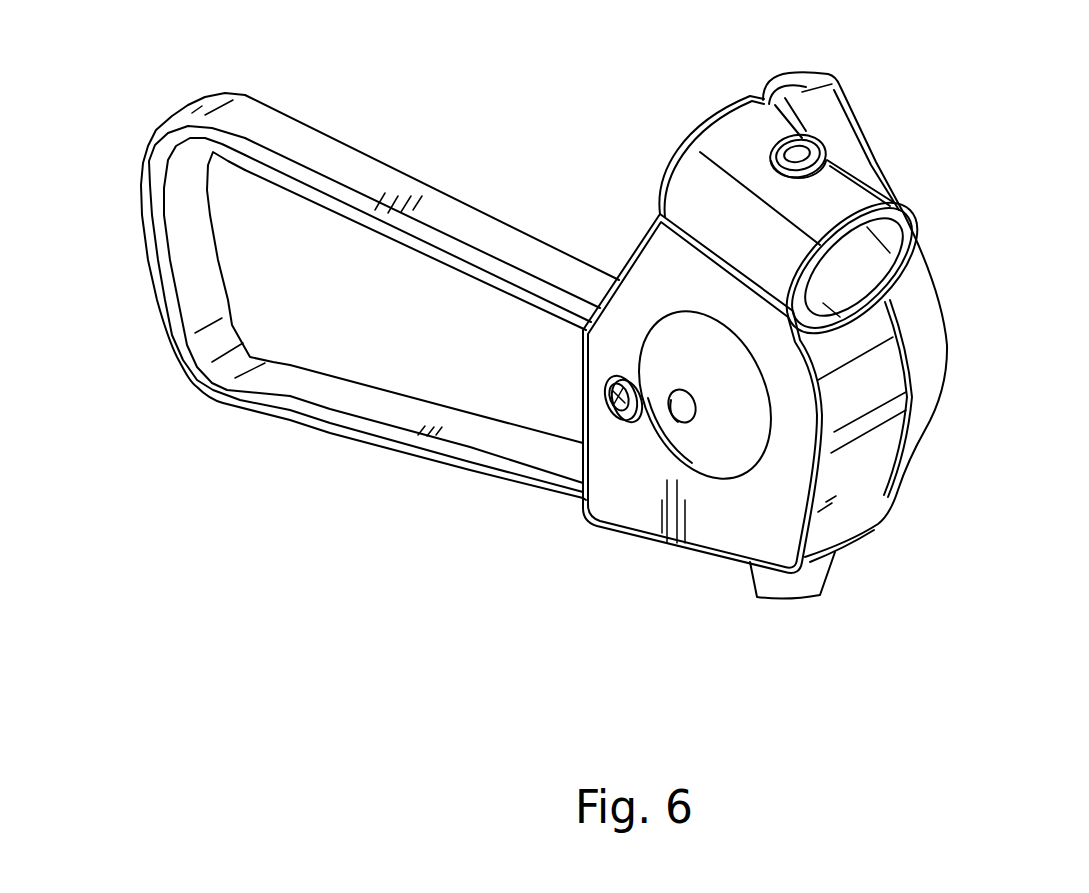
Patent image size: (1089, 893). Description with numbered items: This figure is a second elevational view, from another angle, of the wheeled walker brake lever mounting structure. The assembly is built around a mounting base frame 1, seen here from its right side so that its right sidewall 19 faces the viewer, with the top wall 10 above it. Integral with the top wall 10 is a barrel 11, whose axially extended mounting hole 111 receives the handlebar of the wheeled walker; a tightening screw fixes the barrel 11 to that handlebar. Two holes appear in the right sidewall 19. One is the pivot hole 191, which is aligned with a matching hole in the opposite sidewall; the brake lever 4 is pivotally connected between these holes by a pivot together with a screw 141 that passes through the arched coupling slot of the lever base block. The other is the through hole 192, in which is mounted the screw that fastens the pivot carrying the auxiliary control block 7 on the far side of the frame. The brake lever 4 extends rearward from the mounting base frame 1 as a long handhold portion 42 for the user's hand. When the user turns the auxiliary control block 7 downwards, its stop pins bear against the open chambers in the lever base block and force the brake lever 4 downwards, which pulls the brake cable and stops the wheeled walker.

The mounting base frame 1 is at (930, 476).
The brake lever 4 is at (380, 275).
The handhold portion 42 is at (450, 207).
The auxiliary control block 7 is at (884, 109).
The top wall 10 is at (824, 330).
The barrel 11 is at (900, 253).
The mounting hole 111 is at (897, 208).
The right sidewall 19 is at (633, 520).
The pivot hole 191 is at (640, 428).
The through hole 192 is at (690, 423).
The screw 141 is at (612, 391).